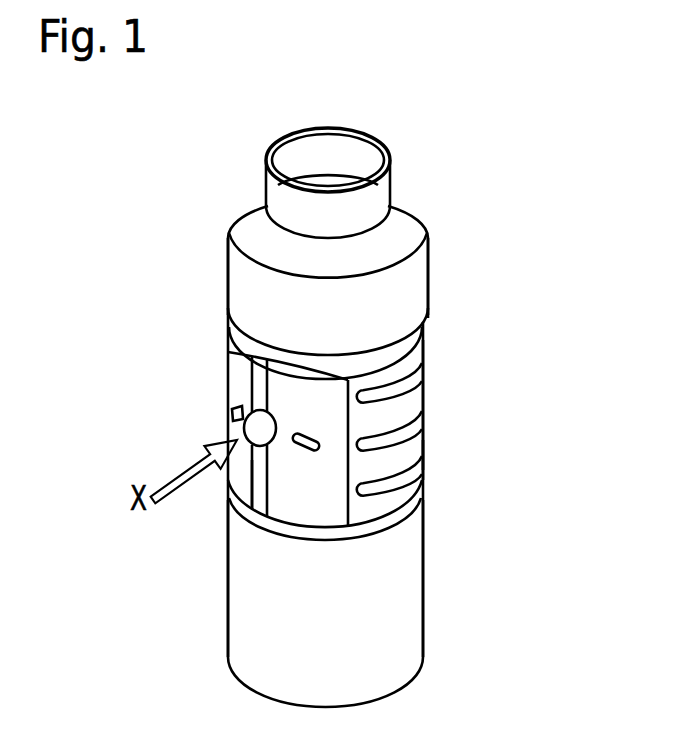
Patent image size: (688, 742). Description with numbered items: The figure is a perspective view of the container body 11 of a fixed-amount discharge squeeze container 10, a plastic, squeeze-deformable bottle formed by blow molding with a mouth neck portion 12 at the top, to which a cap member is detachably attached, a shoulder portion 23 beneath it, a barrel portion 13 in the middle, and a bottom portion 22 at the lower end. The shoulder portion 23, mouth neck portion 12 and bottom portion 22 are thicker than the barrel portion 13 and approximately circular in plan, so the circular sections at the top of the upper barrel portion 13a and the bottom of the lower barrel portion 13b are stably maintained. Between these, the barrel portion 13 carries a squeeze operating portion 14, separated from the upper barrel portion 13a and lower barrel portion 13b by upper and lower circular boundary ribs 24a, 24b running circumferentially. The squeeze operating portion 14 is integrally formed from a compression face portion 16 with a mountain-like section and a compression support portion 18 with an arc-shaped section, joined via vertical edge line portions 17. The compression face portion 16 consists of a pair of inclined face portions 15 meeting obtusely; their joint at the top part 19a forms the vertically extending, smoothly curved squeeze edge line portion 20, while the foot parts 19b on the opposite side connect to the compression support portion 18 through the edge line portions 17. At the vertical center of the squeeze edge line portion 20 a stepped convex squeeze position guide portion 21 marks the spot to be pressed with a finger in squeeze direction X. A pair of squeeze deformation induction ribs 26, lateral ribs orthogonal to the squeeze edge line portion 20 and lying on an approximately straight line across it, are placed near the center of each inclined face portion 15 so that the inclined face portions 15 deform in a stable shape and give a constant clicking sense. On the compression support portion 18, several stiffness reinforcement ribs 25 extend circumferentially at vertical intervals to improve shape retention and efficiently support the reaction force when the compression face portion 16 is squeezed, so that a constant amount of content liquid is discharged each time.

The fixed-amount discharge squeeze container 10 is at (203, 247).
The container body 11 is at (429, 203).
The mouth neck portion 12 is at (388, 144).
The barrel portion 13 is at (423, 387).
The upper barrel portion 13a is at (413, 270).
The lower barrel portion 13b is at (377, 600).
The squeeze operating portion 14 is at (327, 482).
The inclined face portions 15 is at (230, 357).
The compression face portion 16 is at (232, 408).
The edge line portion 17 is at (228, 385).
The compression support portion 18 is at (400, 453).
The top part 19a is at (253, 470).
The foot part 19b is at (350, 468).
The squeeze edge line portion 20 is at (173, 533).
The squeeze position guide portion 21 is at (245, 426).
The bottom portion 22 is at (385, 697).
The shoulder portion 23 is at (252, 217).
The upper circular boundary rib 24a is at (349, 379).
The lower circular boundary rib 24b is at (290, 530).
The stiffness reinforcement ribs 25 is at (405, 372).
The squeeze deformation induction ribs 26 is at (312, 440).